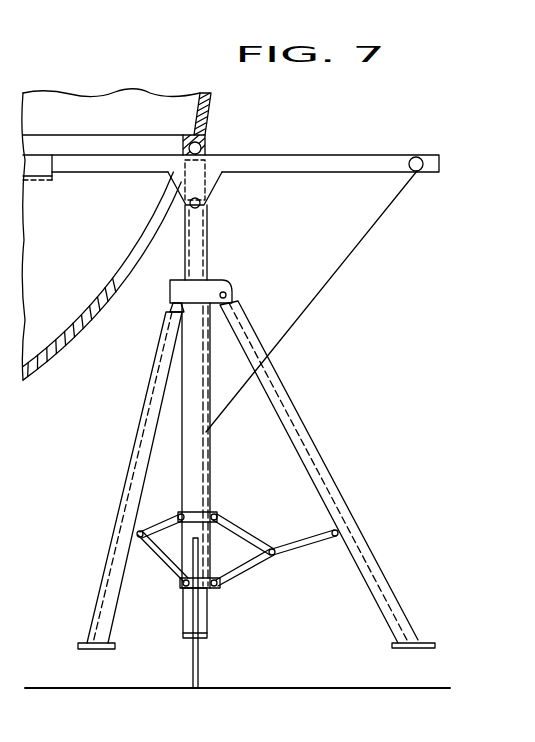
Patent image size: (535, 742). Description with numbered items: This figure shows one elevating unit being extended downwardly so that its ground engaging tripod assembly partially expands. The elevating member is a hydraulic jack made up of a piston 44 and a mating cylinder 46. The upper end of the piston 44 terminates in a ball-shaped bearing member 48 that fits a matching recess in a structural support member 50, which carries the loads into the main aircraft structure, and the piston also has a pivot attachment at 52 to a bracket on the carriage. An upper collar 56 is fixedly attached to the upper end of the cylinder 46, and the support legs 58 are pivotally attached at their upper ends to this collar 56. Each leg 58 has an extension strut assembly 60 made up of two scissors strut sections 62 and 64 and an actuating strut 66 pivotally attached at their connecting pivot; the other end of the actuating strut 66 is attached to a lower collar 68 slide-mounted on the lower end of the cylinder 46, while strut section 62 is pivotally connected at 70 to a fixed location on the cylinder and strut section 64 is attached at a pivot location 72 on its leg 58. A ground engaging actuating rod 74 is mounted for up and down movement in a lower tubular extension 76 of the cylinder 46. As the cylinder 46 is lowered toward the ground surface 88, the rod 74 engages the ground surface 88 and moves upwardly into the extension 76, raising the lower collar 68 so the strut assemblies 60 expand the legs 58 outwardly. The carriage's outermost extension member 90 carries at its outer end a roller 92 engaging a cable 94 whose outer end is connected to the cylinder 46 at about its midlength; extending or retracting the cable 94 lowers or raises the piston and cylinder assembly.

The piston 44 is at (207, 240).
The cylinder 46 is at (205, 370).
The ball-shaped bearing member 48 is at (205, 151).
The structural support member 50 is at (206, 134).
The pivot attachment 52 is at (207, 203).
The upper collar 56 is at (222, 290).
The support legs 58 is at (146, 418).
The extension strut assembly 60 is at (315, 567).
The strut section 62 is at (237, 525).
The strut section 64 is at (302, 545).
The actuating strut 66 is at (233, 575).
The lower collar 68 is at (268, 556).
The pivot connection 70 is at (222, 512).
The pivot location 72 is at (338, 530).
The ground engaging actuating rod 74 is at (201, 660).
The lower tubular extension 76 is at (183, 622).
The ground surface 88 is at (315, 688).
The outermost extension member 90 is at (342, 160).
The roller 92 is at (417, 160).
The cable 94 is at (325, 281).